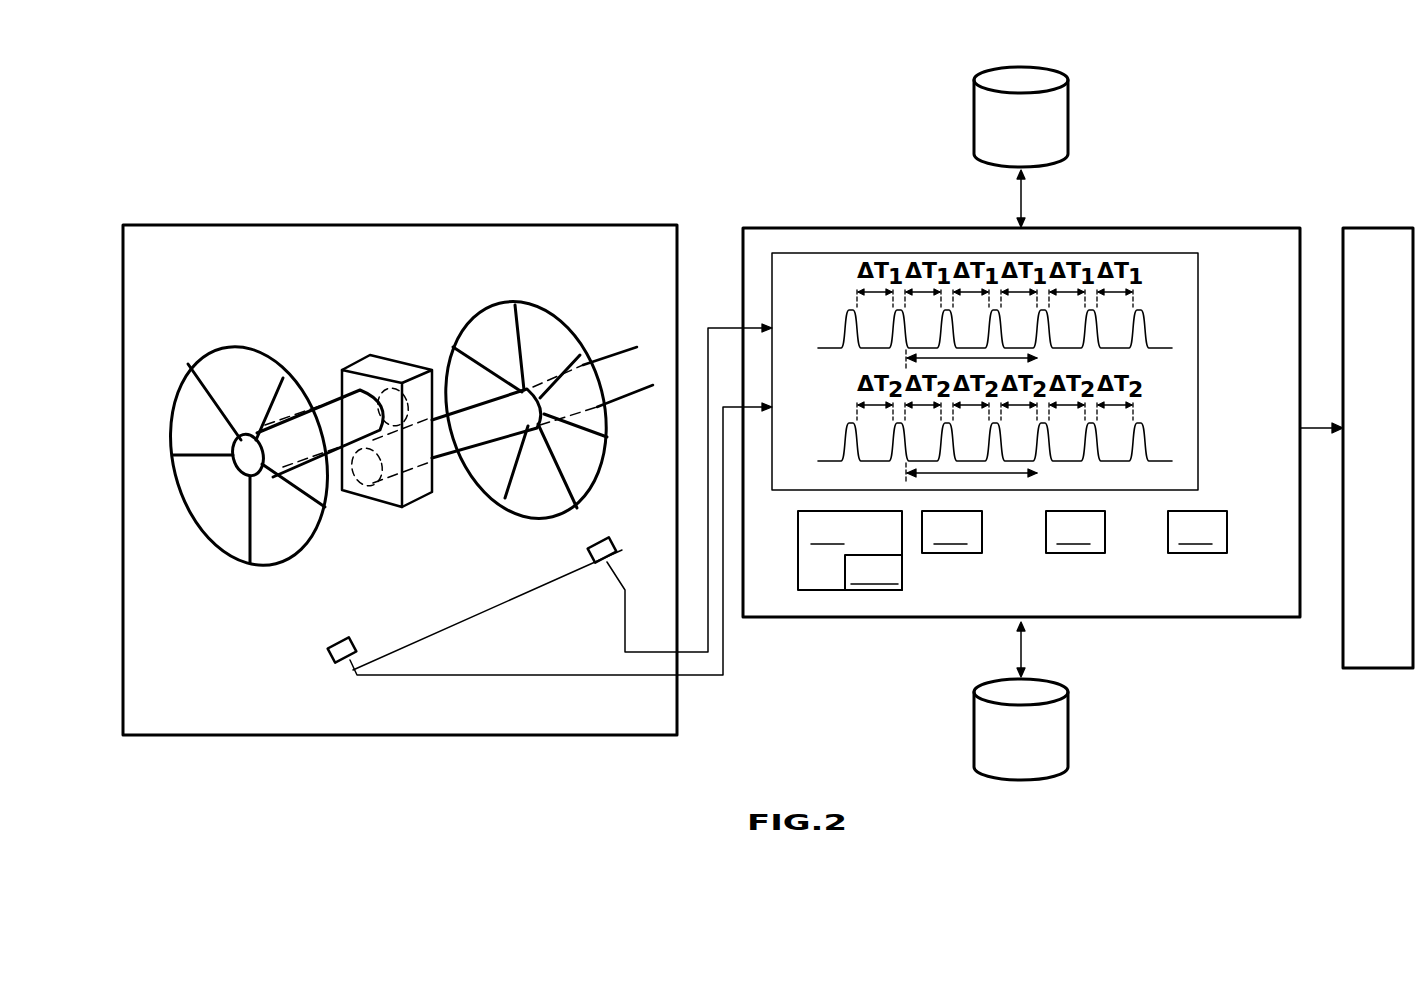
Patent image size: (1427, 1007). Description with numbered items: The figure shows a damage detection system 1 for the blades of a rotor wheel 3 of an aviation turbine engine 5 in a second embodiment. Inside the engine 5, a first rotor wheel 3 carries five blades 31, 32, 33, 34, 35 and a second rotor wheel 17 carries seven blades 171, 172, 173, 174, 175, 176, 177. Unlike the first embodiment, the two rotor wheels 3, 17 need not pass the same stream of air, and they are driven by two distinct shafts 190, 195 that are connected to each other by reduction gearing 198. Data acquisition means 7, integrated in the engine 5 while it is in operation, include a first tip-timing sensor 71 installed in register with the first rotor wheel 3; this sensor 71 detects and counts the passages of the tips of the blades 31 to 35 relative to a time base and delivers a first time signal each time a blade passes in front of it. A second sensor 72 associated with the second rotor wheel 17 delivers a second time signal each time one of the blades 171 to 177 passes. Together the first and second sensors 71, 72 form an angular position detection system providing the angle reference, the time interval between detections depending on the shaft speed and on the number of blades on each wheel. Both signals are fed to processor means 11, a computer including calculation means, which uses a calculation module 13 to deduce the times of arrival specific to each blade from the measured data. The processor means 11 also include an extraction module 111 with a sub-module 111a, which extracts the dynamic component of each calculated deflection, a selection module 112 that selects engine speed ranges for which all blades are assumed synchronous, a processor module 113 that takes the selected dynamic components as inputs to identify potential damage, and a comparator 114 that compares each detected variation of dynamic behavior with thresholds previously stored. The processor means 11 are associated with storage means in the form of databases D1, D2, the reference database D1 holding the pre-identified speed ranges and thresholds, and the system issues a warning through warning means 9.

The damage detection system 1 is at (365, 153).
The first rotor wheel 3 is at (251, 459).
The blade 31 is at (182, 400).
The blade 32 is at (223, 370).
The blade 33 is at (313, 483).
The blade 34 is at (270, 553).
The blade 35 is at (197, 500).
The turbine engine 5 is at (399, 737).
The data acquisition means 7 is at (478, 616).
The first sensor 71 is at (332, 662).
The second sensor 72 is at (613, 545).
The warning means 9 is at (1378, 228).
The processor means 11 is at (1021, 400).
The calculation module 13 is at (1200, 373).
The second rotor wheel 17 is at (546, 410).
The blade 171 is at (483, 320).
The blade 172 is at (550, 332).
The blade 173 is at (600, 425).
The blade 174 is at (590, 482).
The blade 175 is at (537, 512).
The blade 176 is at (493, 470).
The blade 177 is at (458, 367).
The first shaft 190 is at (323, 415).
The second shaft 195 is at (627, 355).
The reduction gearing 198 is at (365, 367).
The extraction module 111 is at (855, 550).
The sub-module 111a is at (878, 572).
The selection module 112 is at (952, 532).
The processor module 113 is at (1075, 532).
The comparator 114 is at (1197, 532).
The database D1 is at (1068, 118).
The database D2 is at (1068, 735).